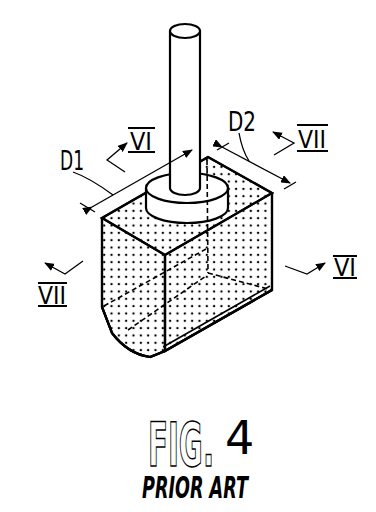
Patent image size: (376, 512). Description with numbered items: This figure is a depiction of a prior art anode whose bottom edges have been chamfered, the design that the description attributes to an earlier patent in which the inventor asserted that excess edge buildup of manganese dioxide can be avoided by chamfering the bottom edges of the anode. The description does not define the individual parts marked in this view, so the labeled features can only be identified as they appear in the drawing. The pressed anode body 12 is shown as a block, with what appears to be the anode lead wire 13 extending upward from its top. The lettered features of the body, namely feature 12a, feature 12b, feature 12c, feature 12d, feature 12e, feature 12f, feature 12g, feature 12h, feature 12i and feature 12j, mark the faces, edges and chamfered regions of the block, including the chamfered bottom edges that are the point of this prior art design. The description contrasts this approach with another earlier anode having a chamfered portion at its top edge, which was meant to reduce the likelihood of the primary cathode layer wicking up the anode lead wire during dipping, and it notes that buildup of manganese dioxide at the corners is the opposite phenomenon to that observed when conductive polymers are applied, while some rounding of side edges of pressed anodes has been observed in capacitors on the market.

The block body 12 is at (273, 240).
The top surface 12a is at (137, 228).
The bottom chamfer strip 12b is at (195, 336).
The front side surface 12c is at (218, 294).
The hidden bottom portion 12d is at (127, 344).
The left side surface 12e is at (100, 248).
The rear side surface 12f is at (275, 216).
The bottom edge 12g is at (158, 356).
The chamfered portion 12h is at (104, 315).
The rounded portion 12i is at (140, 353).
The rear bottom edge 12j is at (271, 289).
The shaft 13 is at (192, 82).